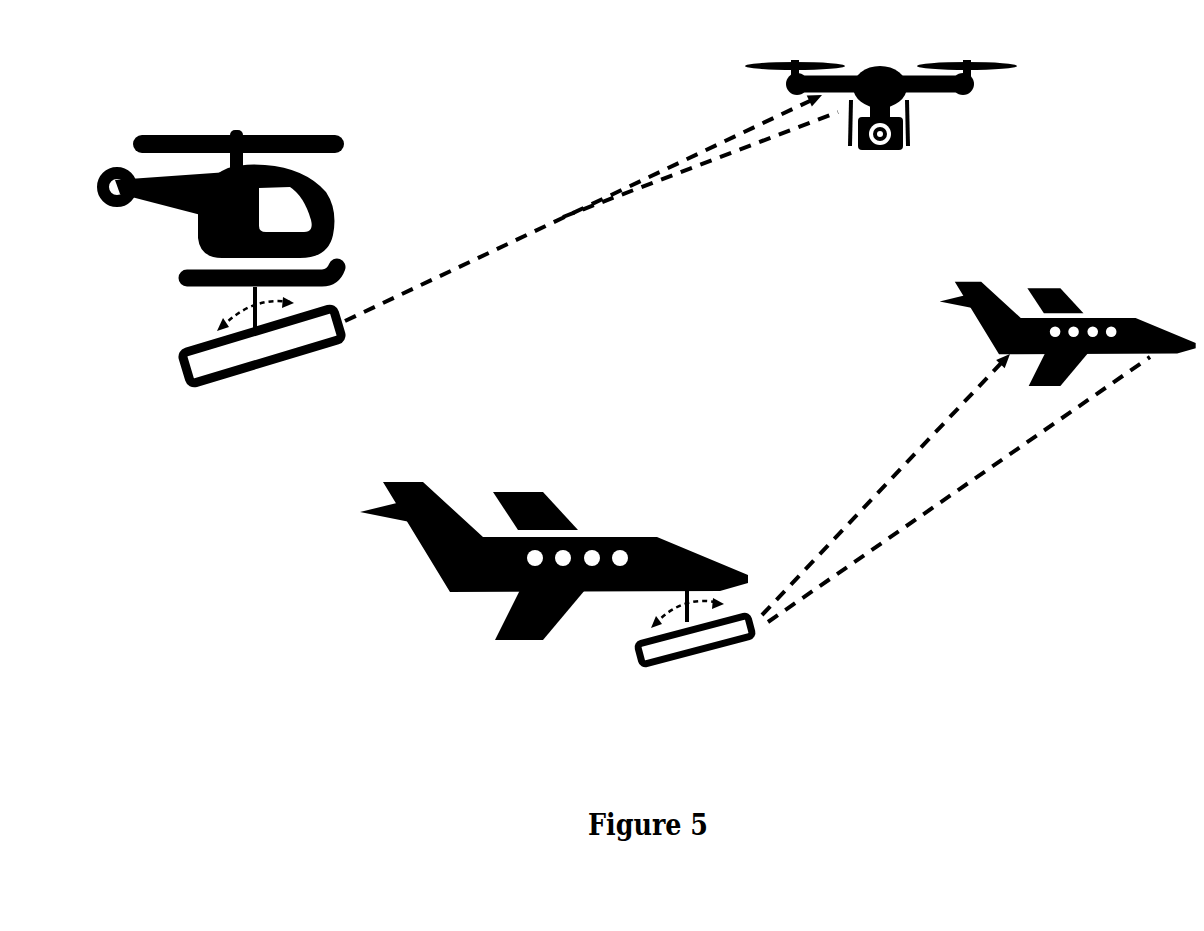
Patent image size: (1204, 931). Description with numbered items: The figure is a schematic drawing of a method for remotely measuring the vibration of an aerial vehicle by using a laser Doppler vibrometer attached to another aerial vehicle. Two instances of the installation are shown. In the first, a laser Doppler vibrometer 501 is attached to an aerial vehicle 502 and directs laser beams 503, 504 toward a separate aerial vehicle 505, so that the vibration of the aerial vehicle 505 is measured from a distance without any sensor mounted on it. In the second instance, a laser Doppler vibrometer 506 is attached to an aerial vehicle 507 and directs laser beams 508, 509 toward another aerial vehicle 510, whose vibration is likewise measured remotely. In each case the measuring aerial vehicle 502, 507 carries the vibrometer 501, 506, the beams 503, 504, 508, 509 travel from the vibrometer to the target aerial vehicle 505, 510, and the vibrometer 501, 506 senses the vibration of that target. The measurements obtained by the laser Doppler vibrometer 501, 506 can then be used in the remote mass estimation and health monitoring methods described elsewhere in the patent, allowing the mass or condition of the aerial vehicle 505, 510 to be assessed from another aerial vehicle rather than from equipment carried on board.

The laser Doppler vibrometer 501 is at (705, 645).
The aerial vehicle 502 is at (663, 535).
The laser beam 503 is at (980, 472).
The laser beam 504 is at (922, 442).
The aerial vehicle 505 is at (1155, 290).
The laser Doppler vibrometer 506 is at (228, 383).
The aerial vehicle 507 is at (181, 270).
The laser beam 508 is at (545, 252).
The laser beam 509 is at (575, 208).
The aerial vehicle 510 is at (880, 50).